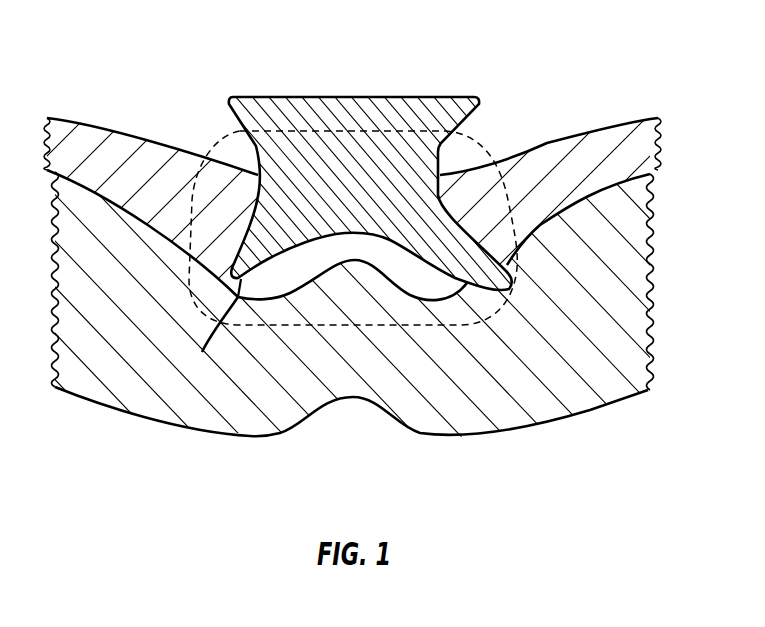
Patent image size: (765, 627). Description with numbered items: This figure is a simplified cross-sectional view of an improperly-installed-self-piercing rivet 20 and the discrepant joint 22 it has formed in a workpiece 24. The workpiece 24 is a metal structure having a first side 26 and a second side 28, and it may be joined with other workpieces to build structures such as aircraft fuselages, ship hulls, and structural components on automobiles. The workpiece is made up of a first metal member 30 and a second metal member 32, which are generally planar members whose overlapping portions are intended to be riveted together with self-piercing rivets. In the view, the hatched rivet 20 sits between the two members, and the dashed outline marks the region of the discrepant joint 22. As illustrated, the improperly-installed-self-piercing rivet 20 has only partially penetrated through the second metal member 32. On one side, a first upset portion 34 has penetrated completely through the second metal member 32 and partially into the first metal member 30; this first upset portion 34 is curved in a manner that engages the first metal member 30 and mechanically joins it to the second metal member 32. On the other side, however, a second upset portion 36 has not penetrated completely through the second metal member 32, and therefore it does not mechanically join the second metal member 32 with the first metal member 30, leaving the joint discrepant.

The improperly-installed-self-piercing rivet 20 is at (408, 96).
The discrepant joint 22 is at (222, 144).
The workpiece 24 is at (133, 36).
The first side 26 is at (105, 409).
The second side 28 is at (88, 122).
The first metal member 30 is at (535, 393).
The second metal member 32 is at (123, 150).
The first upset portion 34 is at (456, 302).
The second upset portion 36 is at (201, 351).